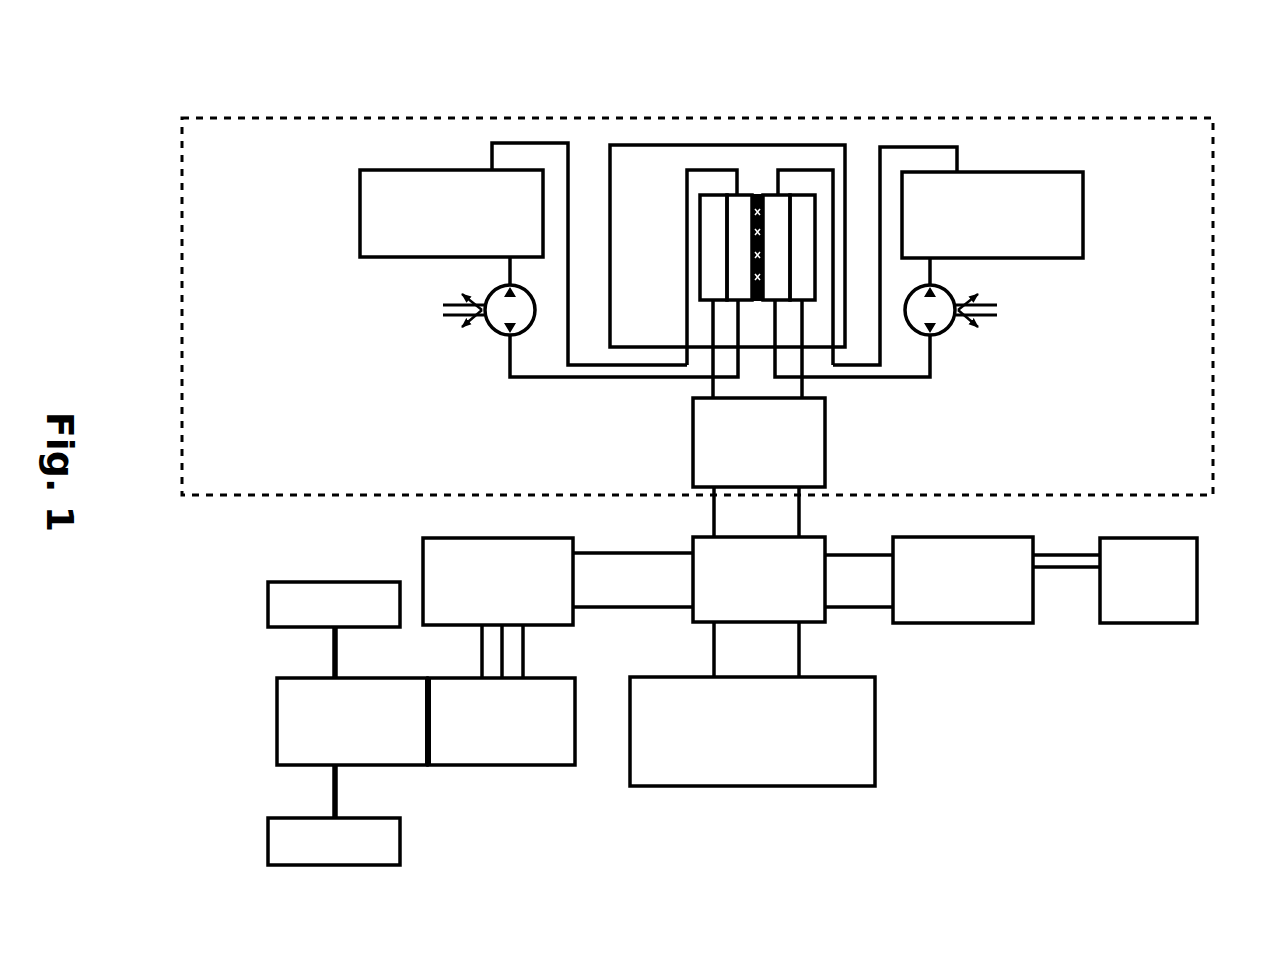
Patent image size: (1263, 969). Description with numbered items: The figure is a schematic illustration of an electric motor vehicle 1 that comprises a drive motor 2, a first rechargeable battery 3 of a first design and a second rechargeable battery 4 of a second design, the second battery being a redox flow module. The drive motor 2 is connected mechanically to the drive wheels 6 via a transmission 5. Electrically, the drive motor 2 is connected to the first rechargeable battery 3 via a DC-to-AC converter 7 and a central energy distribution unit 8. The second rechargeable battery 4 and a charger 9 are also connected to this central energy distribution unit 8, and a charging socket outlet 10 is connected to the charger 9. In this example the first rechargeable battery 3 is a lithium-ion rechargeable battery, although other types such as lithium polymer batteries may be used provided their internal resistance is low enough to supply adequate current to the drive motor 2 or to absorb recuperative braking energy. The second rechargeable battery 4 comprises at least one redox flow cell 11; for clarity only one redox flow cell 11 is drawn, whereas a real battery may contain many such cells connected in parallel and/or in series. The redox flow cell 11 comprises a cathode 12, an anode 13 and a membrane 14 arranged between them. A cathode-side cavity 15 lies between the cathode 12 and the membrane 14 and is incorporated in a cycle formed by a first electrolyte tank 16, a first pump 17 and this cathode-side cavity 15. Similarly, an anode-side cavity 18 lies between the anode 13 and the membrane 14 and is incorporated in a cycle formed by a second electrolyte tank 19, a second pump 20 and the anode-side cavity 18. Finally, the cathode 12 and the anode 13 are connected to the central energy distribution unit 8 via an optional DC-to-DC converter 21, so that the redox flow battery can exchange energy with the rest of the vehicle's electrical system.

The electric motor vehicle 1 is at (1208, 100).
The drive motor 2 is at (483, 752).
The first rechargeable battery 3 is at (762, 767).
The second rechargeable battery 4 is at (1197, 327).
The transmission 5 is at (285, 725).
The drive wheels 6 is at (273, 600).
The DC-to-AC converter 7 is at (435, 560).
The central energy distribution unit 8 is at (807, 600).
The charger 9 is at (995, 610).
The charging socket outlet 10 is at (1175, 613).
The redox flow cell 11 is at (658, 158).
The cathode 12 is at (713, 208).
The anode 13 is at (807, 208).
The membrane 14 is at (757, 193).
The cathode-side cavity 15 is at (735, 206).
The anode-side cavity 18 is at (778, 208).
The first electrolyte tank 16 is at (455, 182).
The first pump 17 is at (497, 318).
The second electrolyte tank 19 is at (1002, 195).
The second pump 20 is at (940, 323).
The DC-to-DC converter 21 is at (810, 457).